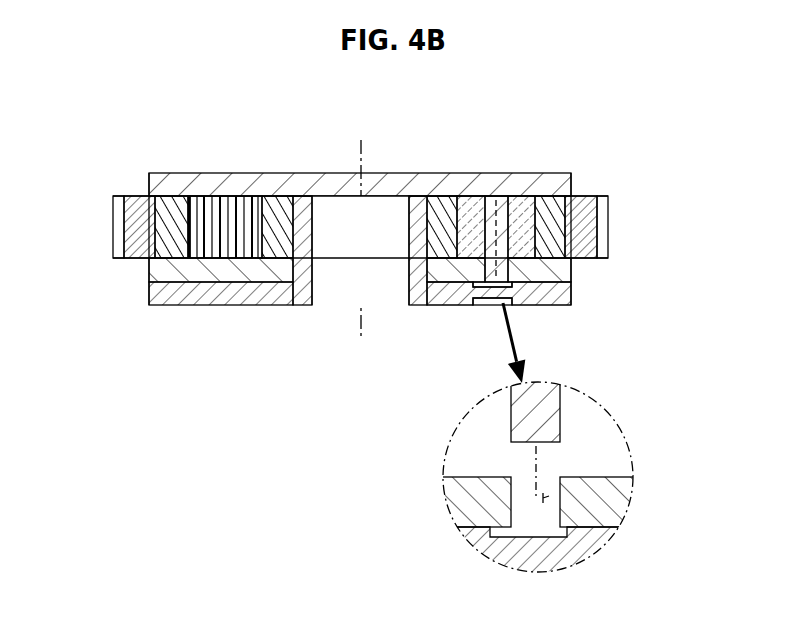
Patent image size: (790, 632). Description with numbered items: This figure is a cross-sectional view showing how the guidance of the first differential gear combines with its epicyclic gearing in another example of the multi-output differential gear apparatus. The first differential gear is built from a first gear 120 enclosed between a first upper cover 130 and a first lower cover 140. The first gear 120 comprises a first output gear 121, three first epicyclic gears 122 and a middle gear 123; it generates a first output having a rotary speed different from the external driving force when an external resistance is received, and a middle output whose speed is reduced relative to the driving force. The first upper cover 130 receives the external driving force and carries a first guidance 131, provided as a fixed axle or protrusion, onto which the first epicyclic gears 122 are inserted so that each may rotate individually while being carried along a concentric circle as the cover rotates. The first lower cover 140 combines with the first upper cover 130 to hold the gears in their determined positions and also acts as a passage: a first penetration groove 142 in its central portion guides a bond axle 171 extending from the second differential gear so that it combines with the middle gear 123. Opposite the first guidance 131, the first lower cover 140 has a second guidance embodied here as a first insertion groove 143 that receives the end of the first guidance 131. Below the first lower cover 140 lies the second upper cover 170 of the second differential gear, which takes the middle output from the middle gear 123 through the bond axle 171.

The first gear 120 is at (638, 215).
The first output gear 121 is at (597, 221).
The first epicyclic gears 122 is at (606, 247).
The middle gear 123 is at (598, 199).
The first upper cover 130 is at (243, 180).
The first guidance 131 is at (512, 273).
The first lower cover 140 is at (149, 263).
The first penetration groove 142 is at (393, 267).
The first insertion groove 143 is at (600, 506).
The second upper cover 170 is at (224, 298).
The bond axle 171 is at (307, 250).